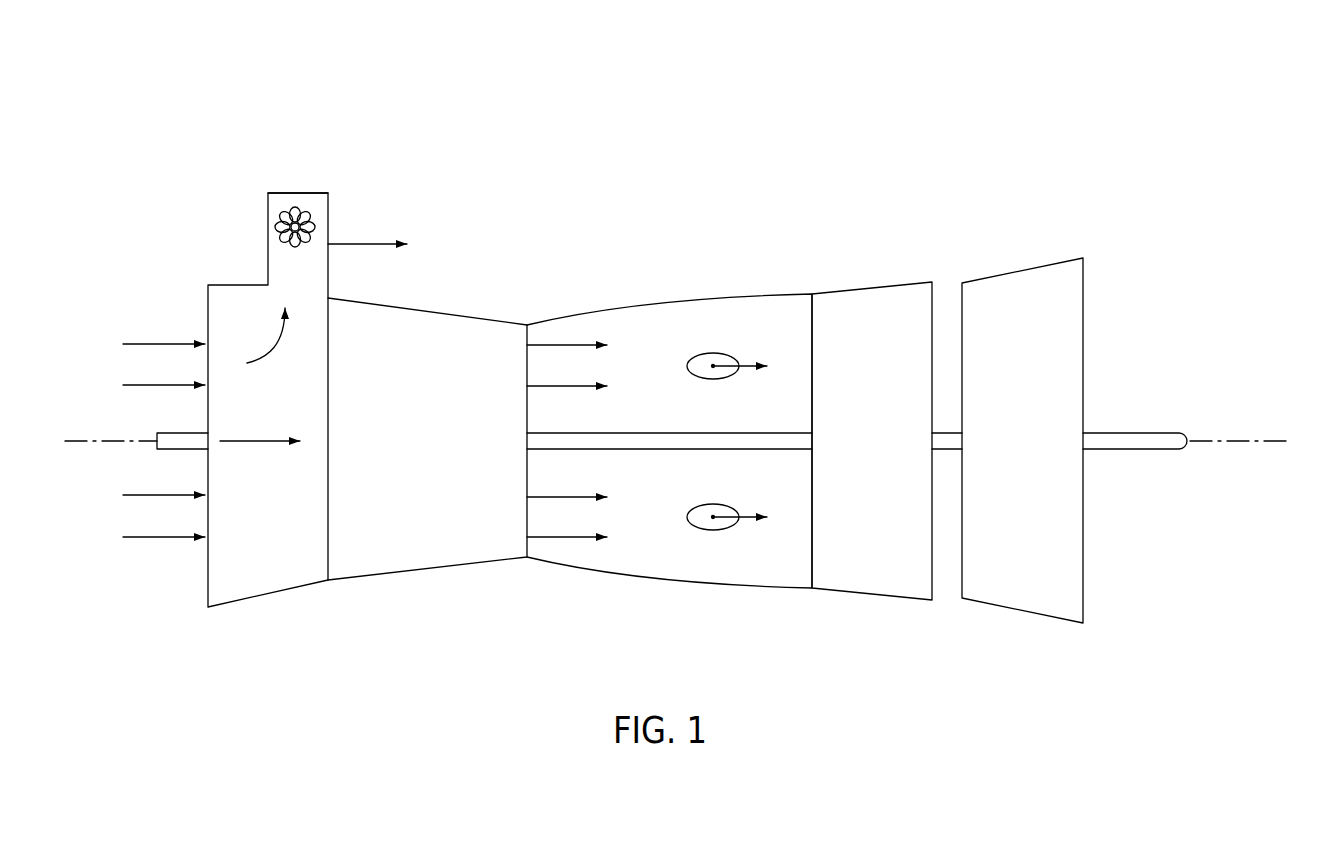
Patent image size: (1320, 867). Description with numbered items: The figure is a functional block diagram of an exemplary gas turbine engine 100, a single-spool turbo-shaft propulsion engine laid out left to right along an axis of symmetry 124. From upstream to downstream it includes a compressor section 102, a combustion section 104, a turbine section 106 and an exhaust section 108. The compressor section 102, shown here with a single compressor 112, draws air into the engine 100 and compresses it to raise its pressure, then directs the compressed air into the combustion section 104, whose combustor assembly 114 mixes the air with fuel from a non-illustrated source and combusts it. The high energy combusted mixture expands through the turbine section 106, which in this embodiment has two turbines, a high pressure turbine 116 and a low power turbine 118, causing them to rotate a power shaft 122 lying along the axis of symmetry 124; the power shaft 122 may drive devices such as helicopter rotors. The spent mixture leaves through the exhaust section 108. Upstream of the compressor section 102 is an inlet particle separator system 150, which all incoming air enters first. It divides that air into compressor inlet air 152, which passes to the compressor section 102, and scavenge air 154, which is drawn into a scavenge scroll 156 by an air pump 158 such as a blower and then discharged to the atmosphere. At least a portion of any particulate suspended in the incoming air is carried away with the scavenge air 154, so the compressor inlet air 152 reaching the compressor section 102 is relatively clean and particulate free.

The gas turbine engine 100 is at (792, 98).
The compressor section 102 is at (527, 175).
The combustion section 104 is at (812, 175).
The turbine section 106 is at (1082, 175).
The exhaust section 108 is at (1187, 175).
The compressor 112 is at (415, 558).
The combustor assembly 114 is at (698, 357).
The high pressure turbine 116 is at (868, 583).
The low power turbine 118 is at (1022, 602).
The power shaft 122 is at (1137, 432).
The axis of symmetry 124 is at (83, 440).
The inlet particle separator system 150 is at (273, 595).
The compressor inlet air 152 is at (253, 443).
The scavenge air 154 is at (267, 360).
The scavenge scroll 156 is at (297, 192).
The air pump 158 is at (313, 227).